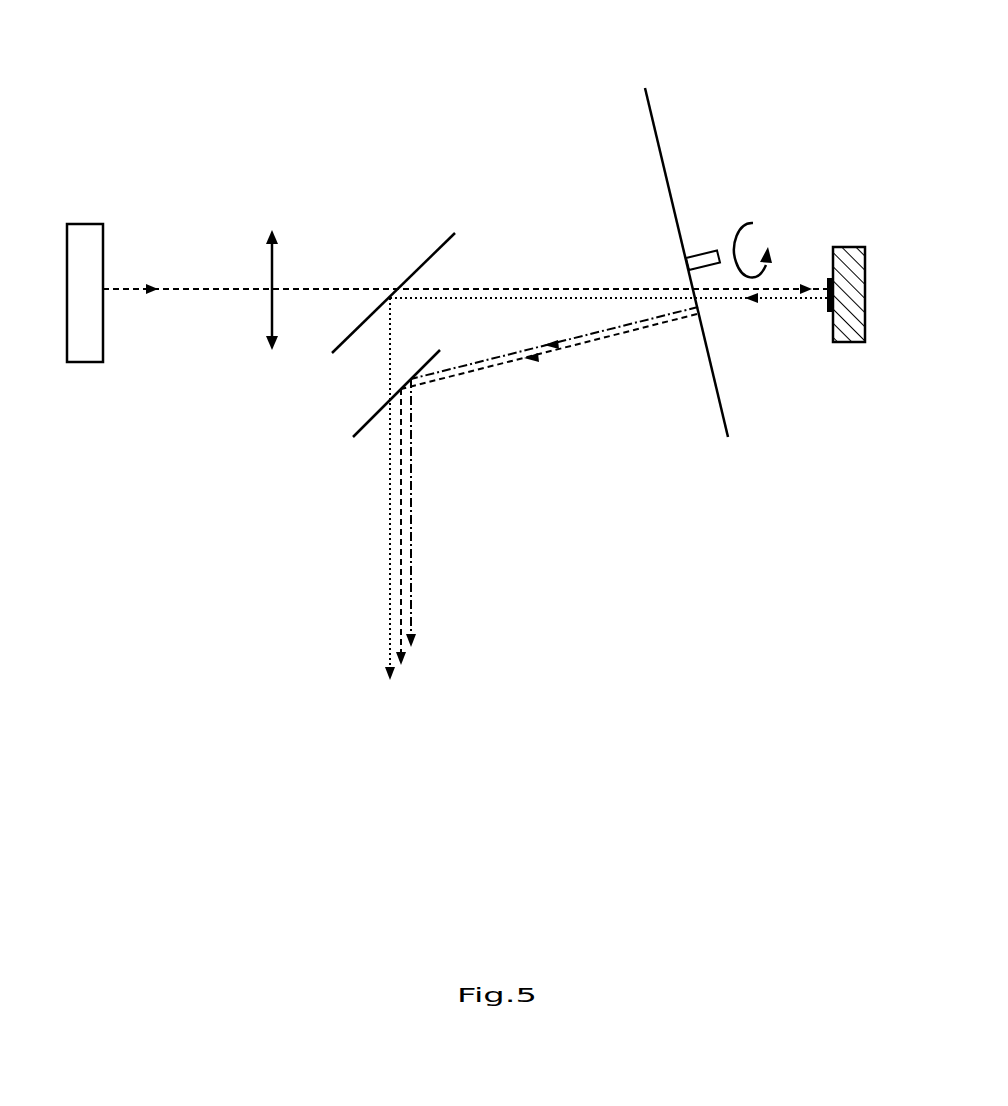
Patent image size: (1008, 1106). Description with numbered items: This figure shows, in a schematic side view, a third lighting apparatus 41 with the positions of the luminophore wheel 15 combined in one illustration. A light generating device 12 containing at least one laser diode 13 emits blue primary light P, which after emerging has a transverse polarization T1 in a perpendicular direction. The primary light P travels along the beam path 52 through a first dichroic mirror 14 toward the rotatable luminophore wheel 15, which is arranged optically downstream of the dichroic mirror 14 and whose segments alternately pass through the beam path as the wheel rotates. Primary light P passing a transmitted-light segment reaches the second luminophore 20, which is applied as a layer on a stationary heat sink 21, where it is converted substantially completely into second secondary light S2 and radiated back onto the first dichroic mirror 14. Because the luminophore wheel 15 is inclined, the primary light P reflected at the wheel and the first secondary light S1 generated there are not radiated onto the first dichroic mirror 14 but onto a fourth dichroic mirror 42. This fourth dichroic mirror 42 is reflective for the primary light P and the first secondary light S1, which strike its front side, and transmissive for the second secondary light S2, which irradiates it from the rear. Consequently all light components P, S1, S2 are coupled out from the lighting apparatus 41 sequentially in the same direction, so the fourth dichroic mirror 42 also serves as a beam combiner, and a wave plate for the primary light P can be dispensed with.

The third lighting apparatus 41 is at (402, 92).
The light generating device 12 is at (88, 262).
The laser diode 13 is at (85, 242).
The transverse polarization T1 is at (275, 250).
The first dichroic mirror 14 is at (430, 257).
The fourth dichroic mirror 42 is at (370, 425).
The luminophore wheel 15 is at (655, 130).
The beam path 52 is at (576, 284).
The stationary heat sink 21 is at (845, 247).
The second luminophore 20 is at (828, 282).
The primary light P is at (173, 288).
The first secondary light S1 is at (465, 365).
The second secondary light S2 is at (785, 303).